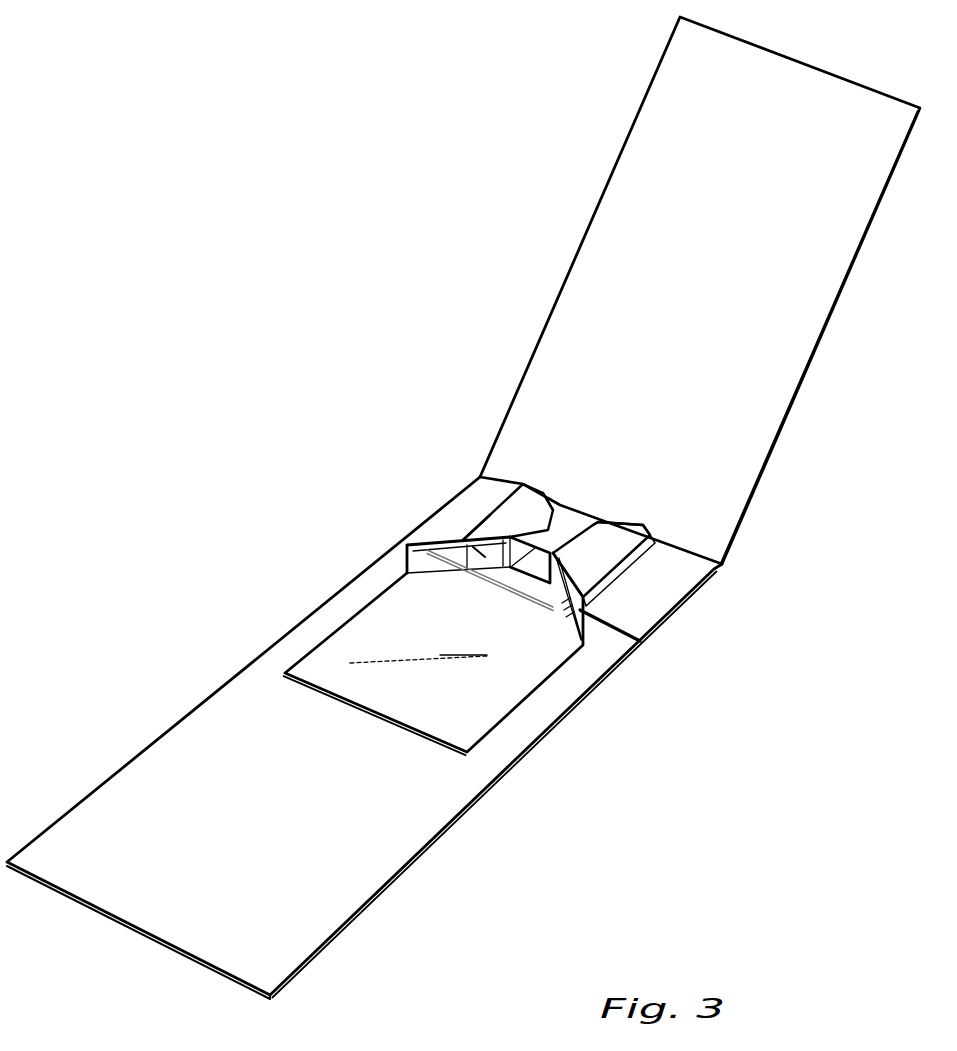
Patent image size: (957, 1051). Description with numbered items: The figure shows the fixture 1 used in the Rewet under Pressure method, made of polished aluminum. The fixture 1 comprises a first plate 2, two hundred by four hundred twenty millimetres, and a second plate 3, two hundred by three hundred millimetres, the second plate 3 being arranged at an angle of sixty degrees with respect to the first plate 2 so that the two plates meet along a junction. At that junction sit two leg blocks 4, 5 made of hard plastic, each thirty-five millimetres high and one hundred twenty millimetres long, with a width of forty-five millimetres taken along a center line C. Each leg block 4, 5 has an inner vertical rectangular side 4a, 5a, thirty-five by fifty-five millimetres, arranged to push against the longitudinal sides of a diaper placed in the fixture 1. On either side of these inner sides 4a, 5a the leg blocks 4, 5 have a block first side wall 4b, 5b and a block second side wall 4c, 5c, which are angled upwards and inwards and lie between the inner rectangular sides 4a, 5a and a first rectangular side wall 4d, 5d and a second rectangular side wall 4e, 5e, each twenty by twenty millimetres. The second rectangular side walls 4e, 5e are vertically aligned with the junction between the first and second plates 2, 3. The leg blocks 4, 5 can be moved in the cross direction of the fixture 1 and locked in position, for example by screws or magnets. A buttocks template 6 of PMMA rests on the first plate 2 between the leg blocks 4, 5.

The fixture 1 is at (496, 206).
The first plate 2 is at (423, 823).
The second plate 3 is at (768, 383).
The leg block 4 is at (615, 560).
The inner vertical rectangular side 4a is at (585, 522).
The block first side wall 4b is at (563, 618).
The block second side wall 4c is at (623, 523).
The first rectangular side wall 4d is at (600, 595).
The second rectangular side wall 4e is at (645, 525).
The leg block 5 is at (441, 432).
The inner vertical rectangular side 5a is at (578, 528).
The block first side wall 5b is at (463, 537).
The block second side wall 5c is at (553, 492).
The first rectangular side wall 5d is at (400, 547).
The second rectangular side wall 5e is at (540, 500).
The buttocks template 6 is at (457, 698).
The center line C is at (603, 555).